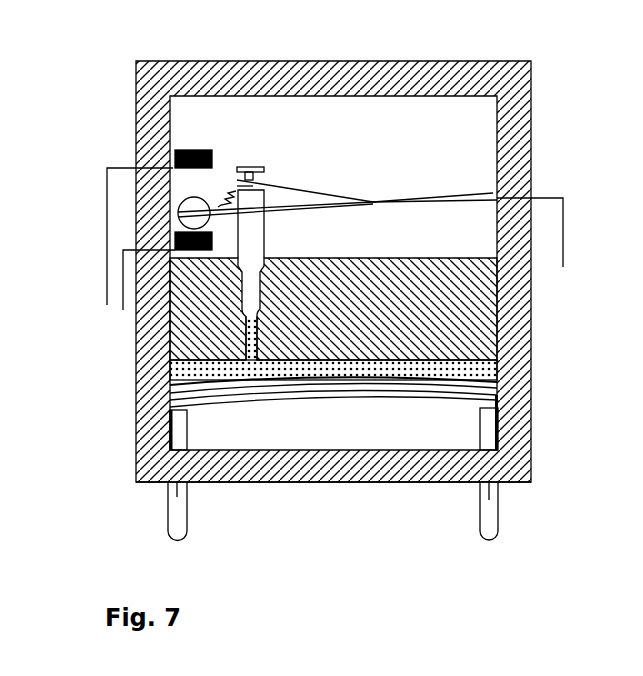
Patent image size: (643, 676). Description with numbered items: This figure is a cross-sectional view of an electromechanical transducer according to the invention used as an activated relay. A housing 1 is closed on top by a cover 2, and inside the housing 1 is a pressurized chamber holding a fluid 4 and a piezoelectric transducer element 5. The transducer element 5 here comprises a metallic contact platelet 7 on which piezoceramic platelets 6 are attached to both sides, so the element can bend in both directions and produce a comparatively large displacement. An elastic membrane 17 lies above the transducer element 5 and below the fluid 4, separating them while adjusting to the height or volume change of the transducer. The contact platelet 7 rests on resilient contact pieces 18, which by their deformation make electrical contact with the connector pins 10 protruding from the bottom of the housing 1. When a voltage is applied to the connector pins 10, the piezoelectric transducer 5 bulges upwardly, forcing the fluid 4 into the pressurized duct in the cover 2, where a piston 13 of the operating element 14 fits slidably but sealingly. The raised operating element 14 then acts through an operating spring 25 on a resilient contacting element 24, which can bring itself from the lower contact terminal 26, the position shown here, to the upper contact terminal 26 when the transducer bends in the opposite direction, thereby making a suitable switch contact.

The housing 1 is at (148, 428).
The contact platelet 7 is at (140, 458).
The cover 2 is at (237, 326).
The piston 13 is at (240, 302).
The operating element 14 is at (250, 244).
The resilient contacting element 24 is at (292, 205).
The operating spring 25 is at (232, 190).
The contact terminal 26 is at (174, 226).
The fluid 4 is at (507, 350).
The membrane 17 is at (482, 386).
The piezoceramic platelets 6 is at (500, 395).
The piezoelectric transducer element 5 is at (499, 412).
The contact pieces 18 is at (500, 412).
The connector pins 10 is at (177, 523).